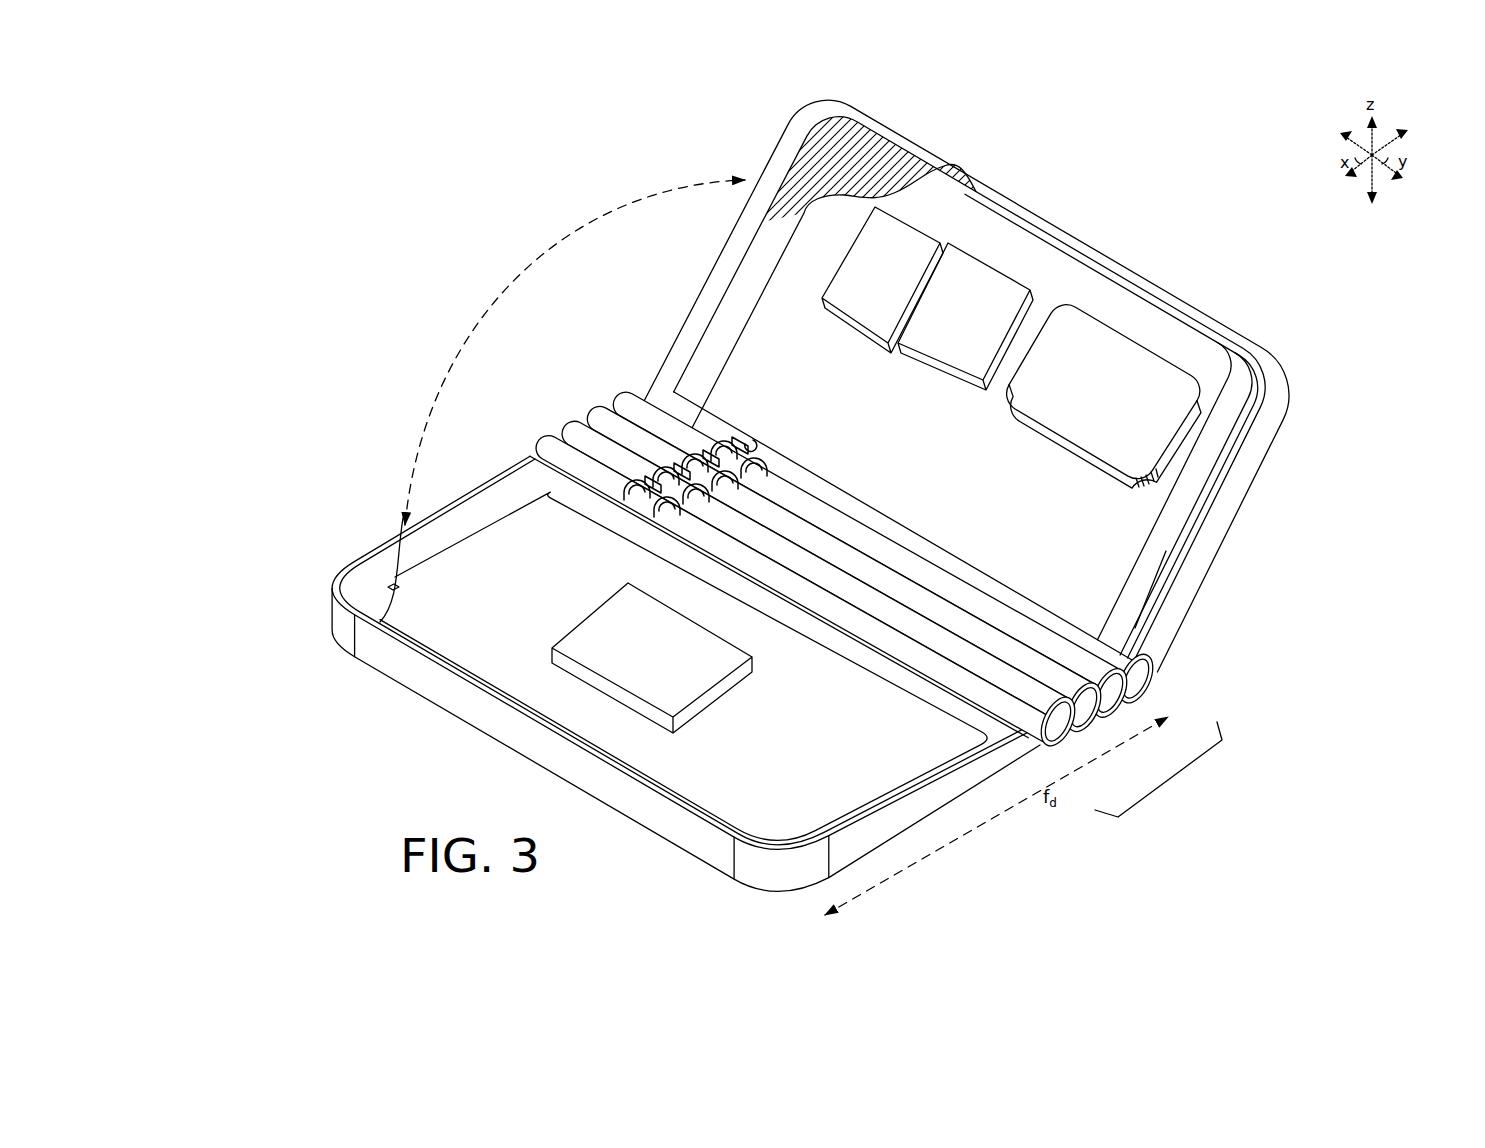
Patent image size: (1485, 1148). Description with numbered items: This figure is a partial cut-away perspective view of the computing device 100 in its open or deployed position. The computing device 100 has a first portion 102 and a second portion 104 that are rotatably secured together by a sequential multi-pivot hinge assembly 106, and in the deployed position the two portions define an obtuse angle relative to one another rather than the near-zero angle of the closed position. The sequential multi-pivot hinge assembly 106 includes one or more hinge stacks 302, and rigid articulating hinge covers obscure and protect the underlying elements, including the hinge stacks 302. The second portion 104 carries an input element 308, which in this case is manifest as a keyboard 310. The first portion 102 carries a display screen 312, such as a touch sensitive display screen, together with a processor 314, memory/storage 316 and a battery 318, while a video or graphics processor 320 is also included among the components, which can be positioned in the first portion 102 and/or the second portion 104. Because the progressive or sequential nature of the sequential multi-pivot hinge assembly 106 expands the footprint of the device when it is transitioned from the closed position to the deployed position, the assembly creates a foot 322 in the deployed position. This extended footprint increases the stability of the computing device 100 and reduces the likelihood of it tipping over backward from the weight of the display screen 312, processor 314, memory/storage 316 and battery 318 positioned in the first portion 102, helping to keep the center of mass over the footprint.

The computing device 100 is at (598, 184).
The first portion 102 is at (1031, 207).
The second portion 104 is at (461, 717).
The sequential multi-pivot hinge assembly 106 is at (796, 533).
The hinge stack 302 is at (733, 411).
The input element 308 is at (386, 586).
The keyboard 310 is at (394, 568).
The display screen 312 is at (774, 158).
The processor 314 is at (882, 280).
The memory/storage 316 is at (965, 316).
The battery 318 is at (1104, 396).
The graphics processor 320 is at (652, 658).
The foot 322 is at (1172, 772).